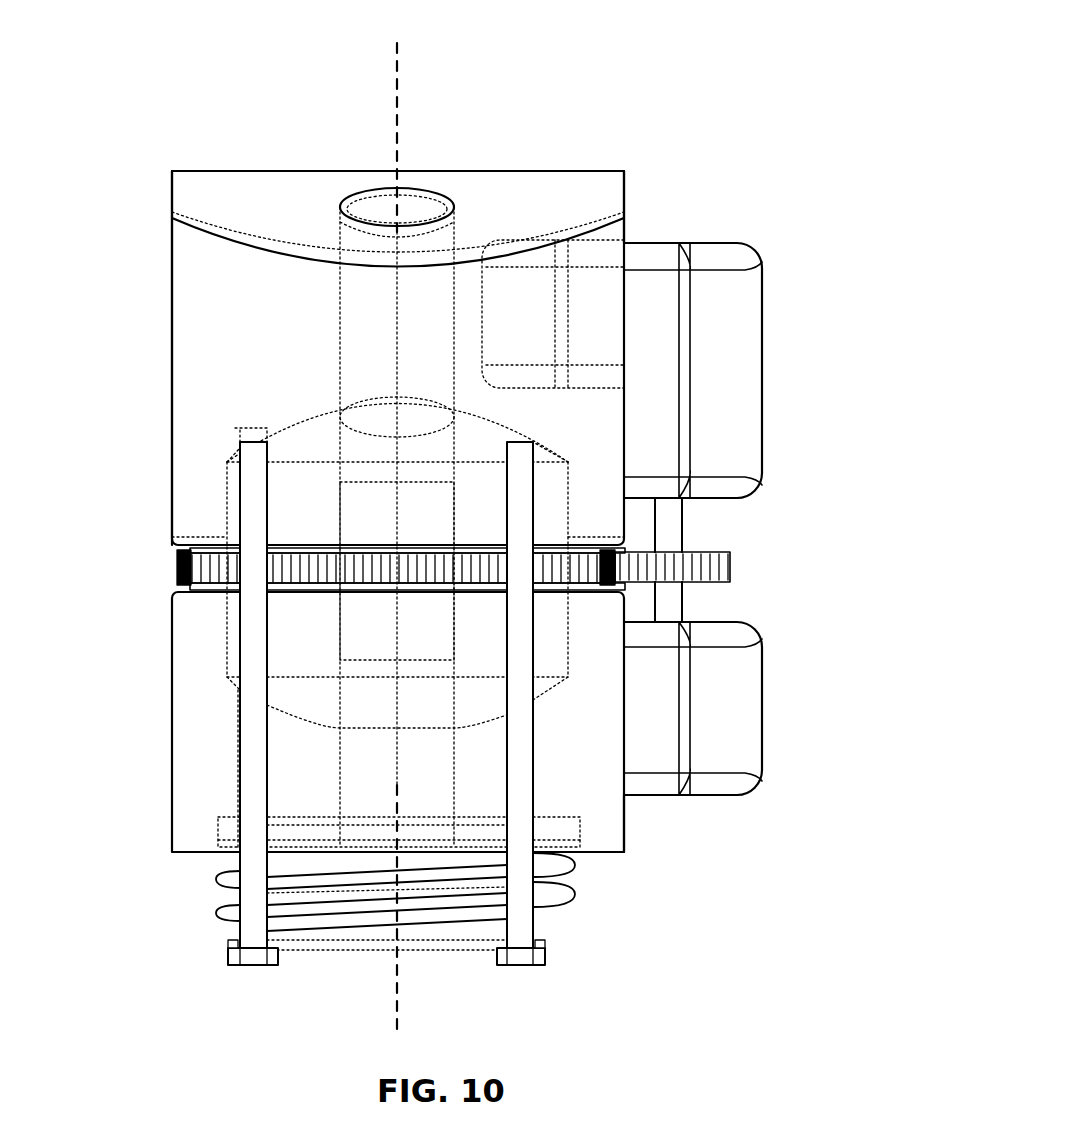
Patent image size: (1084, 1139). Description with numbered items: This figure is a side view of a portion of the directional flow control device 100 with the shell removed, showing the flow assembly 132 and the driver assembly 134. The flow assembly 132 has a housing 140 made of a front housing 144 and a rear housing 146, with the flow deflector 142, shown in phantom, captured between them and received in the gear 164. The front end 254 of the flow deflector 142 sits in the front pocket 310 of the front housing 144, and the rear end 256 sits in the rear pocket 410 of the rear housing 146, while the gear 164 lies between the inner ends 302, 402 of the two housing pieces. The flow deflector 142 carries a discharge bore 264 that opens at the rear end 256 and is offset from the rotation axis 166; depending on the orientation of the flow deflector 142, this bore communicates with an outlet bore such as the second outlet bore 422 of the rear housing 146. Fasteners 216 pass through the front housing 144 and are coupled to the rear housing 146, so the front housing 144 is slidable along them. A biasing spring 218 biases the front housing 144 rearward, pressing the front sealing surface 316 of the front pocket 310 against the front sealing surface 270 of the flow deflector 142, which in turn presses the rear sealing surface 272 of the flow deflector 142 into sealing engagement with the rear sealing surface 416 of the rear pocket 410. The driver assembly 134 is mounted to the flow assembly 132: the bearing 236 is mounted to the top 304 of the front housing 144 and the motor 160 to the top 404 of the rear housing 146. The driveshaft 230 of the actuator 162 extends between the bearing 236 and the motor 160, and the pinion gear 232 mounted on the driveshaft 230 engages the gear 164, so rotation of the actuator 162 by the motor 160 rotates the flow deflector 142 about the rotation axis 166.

The directional flow control device 100 is at (662, 43).
The flow assembly 132 is at (127, 273).
The driver assembly 134 is at (793, 335).
The housing 140 is at (240, 137).
The flow deflector 142 is at (306, 550).
The front housing 144 is at (624, 835).
The rear housing 146 is at (624, 190).
The motor 160 is at (752, 403).
The actuator 162 is at (756, 556).
The gear 164 is at (578, 553).
The rotation axis 166 is at (399, 80).
The fasteners 216 is at (250, 921).
The biasing spring 218 is at (566, 894).
The driveshaft 230 is at (672, 598).
The pinion gear 232 is at (722, 567).
The bearing 236 is at (748, 718).
The front end 254 is at (355, 695).
The rear end 256 is at (303, 427).
The discharge bore 264 is at (380, 418).
The front sealing surface 270 is at (350, 705).
The rear sealing surface 272 is at (333, 417).
The inner end 302 is at (190, 572).
The top 304 is at (624, 805).
The front pocket 310 is at (234, 638).
The front sealing surface 316 is at (470, 713).
The inner end 402 is at (176, 548).
The top 404 is at (624, 225).
The rear pocket 410 is at (558, 480).
The rear sealing surface 416 is at (468, 422).
The second outlet bore 422 is at (372, 207).